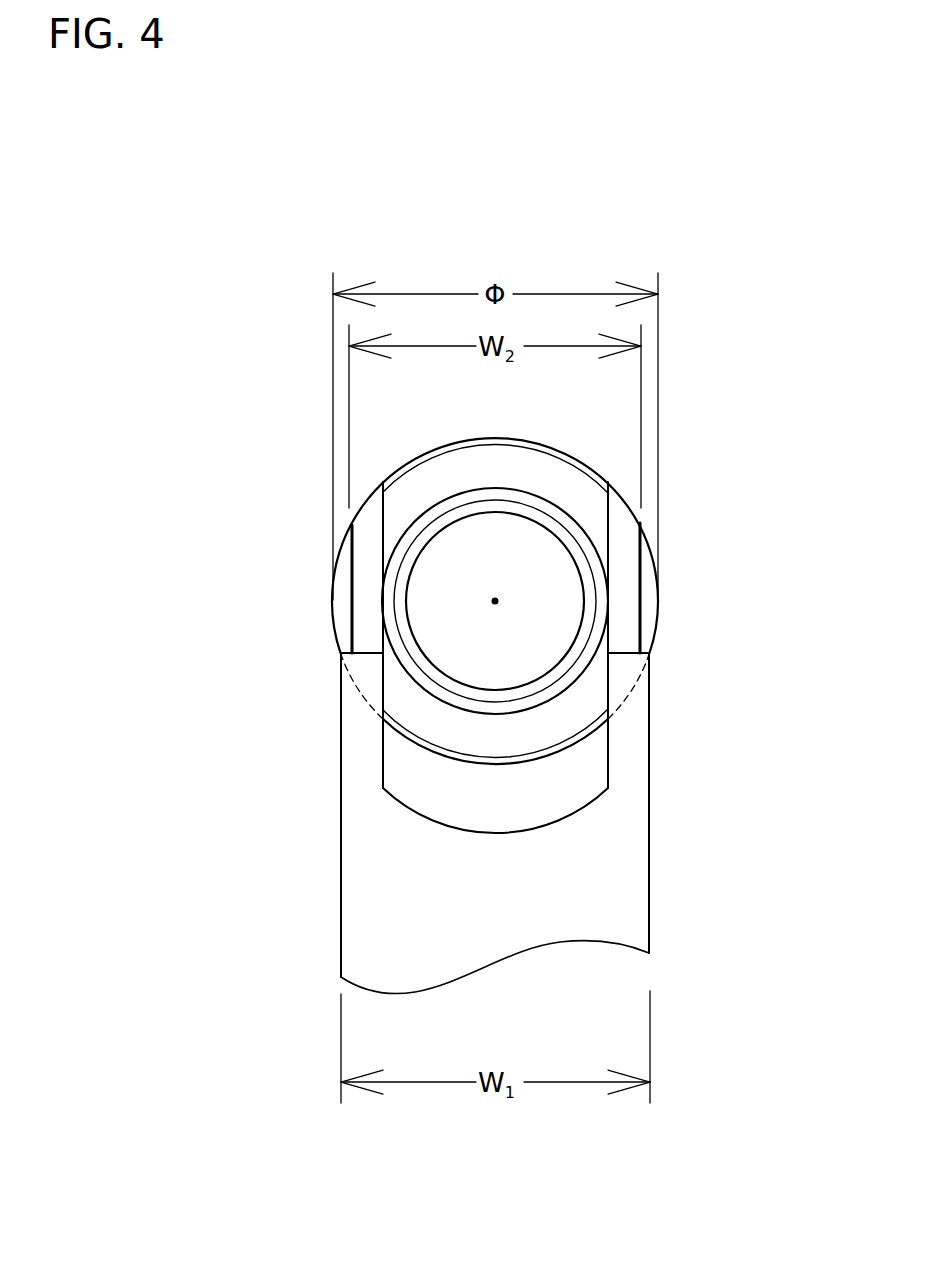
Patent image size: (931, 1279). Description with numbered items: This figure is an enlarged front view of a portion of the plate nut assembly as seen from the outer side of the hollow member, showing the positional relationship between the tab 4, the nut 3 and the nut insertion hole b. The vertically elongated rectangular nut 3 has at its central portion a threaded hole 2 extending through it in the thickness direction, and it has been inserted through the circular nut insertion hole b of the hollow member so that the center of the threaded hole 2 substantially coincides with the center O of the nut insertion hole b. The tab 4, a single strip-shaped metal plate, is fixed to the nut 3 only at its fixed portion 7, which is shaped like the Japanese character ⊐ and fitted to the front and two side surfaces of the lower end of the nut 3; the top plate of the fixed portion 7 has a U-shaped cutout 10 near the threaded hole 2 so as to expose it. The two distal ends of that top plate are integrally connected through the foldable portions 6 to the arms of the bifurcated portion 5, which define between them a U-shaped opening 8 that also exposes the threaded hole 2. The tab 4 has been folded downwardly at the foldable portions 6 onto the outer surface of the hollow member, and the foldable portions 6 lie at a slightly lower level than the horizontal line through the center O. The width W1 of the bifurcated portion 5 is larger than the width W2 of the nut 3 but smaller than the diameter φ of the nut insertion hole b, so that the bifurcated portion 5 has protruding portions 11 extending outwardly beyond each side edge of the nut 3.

The threaded hole 2 is at (422, 563).
The nut 3 is at (540, 470).
The center of the nut insertion hole o is at (497, 600).
The nut insertion hole b is at (662, 570).
The tab 4 is at (338, 850).
The bifurcated portion 5 is at (628, 773).
The foldable portions 6 is at (360, 640).
The fixed portion 7 is at (533, 798).
The U-shaped opening 8 is at (443, 822).
The U-shaped cutout 10 is at (420, 726).
The protruding portions 11 is at (340, 657).